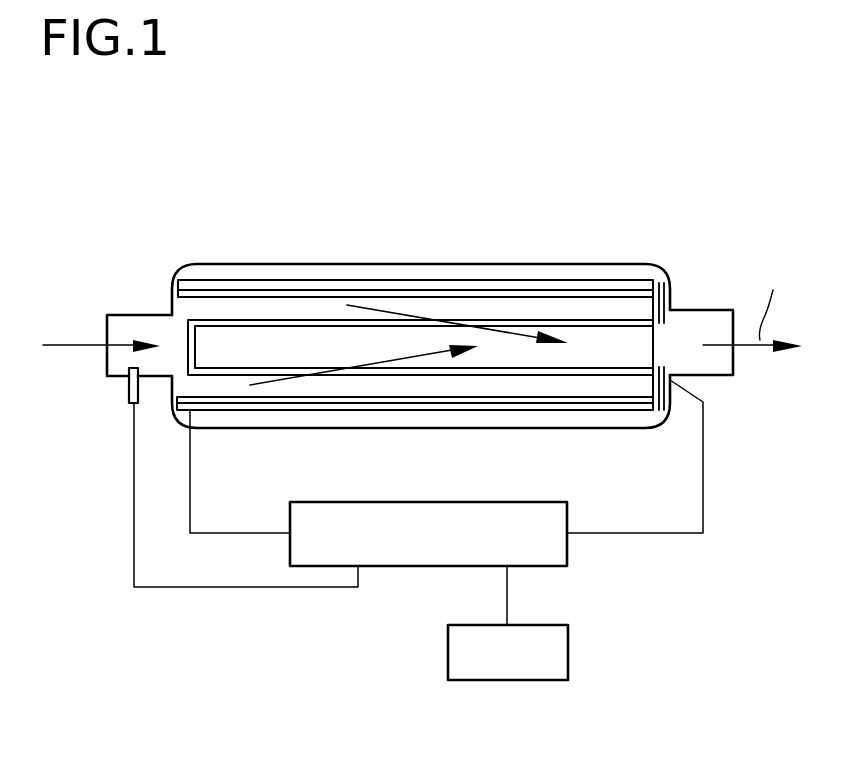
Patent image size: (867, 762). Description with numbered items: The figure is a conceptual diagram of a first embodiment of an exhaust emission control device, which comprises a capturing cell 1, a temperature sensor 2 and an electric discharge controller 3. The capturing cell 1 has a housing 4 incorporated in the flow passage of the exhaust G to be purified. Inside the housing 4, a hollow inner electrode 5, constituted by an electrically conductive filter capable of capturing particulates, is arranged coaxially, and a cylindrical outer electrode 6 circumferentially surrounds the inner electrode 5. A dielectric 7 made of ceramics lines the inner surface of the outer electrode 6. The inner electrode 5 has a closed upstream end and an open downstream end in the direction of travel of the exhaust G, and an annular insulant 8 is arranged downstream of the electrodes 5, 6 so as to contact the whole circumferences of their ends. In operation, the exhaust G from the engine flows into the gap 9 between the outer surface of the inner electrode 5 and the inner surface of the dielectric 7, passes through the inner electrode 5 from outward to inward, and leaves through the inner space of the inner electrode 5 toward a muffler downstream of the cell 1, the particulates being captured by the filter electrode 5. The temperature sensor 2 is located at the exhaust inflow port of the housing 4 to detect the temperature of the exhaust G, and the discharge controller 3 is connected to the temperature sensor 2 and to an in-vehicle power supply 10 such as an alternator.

The capturing cell 1 is at (368, 252).
The temperature sensor 2 is at (127, 393).
The electric discharge controller 3 is at (567, 560).
The housing 4 is at (513, 265).
The hollow inner electrode 5 is at (595, 377).
The cylindrical outer electrode 6 is at (260, 405).
The dielectric 7 is at (315, 397).
The annular insulant 8 is at (673, 398).
The gap 9 is at (430, 385).
The in-vehicle power supply 10 is at (568, 663).
The exhaust G is at (70, 343).